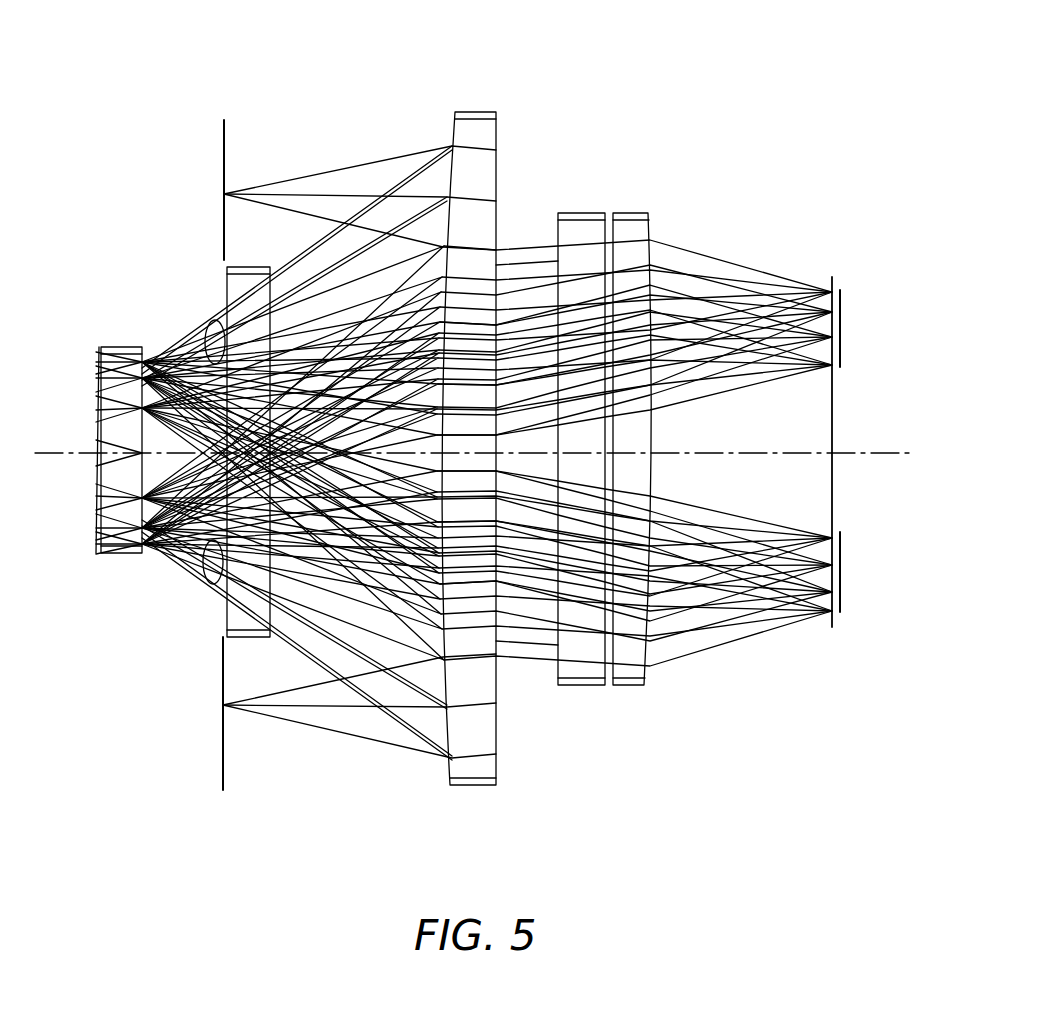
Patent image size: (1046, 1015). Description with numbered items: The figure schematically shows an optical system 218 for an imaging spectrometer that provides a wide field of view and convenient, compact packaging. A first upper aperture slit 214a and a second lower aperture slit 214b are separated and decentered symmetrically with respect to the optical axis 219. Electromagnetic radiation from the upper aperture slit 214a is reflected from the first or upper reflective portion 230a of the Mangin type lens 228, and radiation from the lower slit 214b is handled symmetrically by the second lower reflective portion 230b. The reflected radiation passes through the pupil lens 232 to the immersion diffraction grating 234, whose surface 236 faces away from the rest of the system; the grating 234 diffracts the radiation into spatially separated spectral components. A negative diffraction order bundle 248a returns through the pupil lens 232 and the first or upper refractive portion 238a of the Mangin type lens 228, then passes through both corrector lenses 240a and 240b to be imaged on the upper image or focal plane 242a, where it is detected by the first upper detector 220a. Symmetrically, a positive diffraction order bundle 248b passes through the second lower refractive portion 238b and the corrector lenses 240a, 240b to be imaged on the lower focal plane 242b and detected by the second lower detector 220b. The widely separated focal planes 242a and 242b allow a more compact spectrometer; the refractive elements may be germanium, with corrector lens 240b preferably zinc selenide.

The optical system 218 is at (534, 66).
The optical axis 219 is at (72, 450).
The first upper aperture slit 214a is at (224, 194).
The second lower aperture slit 214b is at (223, 705).
The first upper detector 220a is at (840, 300).
The second lower detector 220b is at (840, 585).
The Mangin type lens 228 is at (468, 786).
The first upper reflective portion 230a is at (497, 130).
The second lower reflective portion 230b is at (497, 733).
The pupil lens 232 is at (250, 637).
The immersion diffraction grating 234 is at (128, 553).
The lens surface 236 is at (97, 553).
The first upper refractive portion 238a is at (499, 272).
The second lower refractive portion 238b is at (500, 610).
The corrector lens 240a is at (582, 687).
The corrector lens 240b is at (628, 687).
The upper image or focal plane 242a is at (830, 278).
The lower image or focal plane 242b is at (830, 624).
The negative diffraction order bundle 248a is at (210, 325).
The positive diffraction order bundle 248b is at (208, 582).